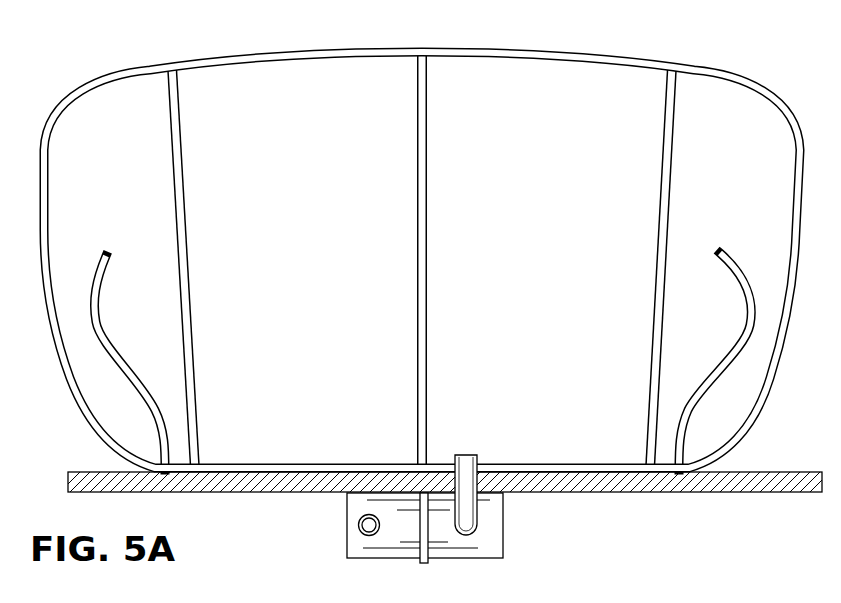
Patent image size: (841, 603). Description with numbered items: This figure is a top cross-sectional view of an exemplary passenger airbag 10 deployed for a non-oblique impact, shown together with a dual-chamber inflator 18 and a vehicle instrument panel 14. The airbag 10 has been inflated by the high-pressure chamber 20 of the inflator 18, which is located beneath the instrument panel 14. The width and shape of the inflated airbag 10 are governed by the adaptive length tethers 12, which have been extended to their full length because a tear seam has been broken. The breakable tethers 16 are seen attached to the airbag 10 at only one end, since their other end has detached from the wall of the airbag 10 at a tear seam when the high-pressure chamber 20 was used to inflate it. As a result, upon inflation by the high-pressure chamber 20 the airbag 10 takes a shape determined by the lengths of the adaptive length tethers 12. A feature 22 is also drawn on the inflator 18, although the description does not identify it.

The frame 10 is at (147, 64).
The support struts 12 is at (180, 154).
The base plate 14 is at (707, 493).
The hook members 16 is at (97, 292).
The mounting assembly 18 is at (332, 558).
The bracket 20 is at (503, 505).
The hole 22 is at (347, 525).